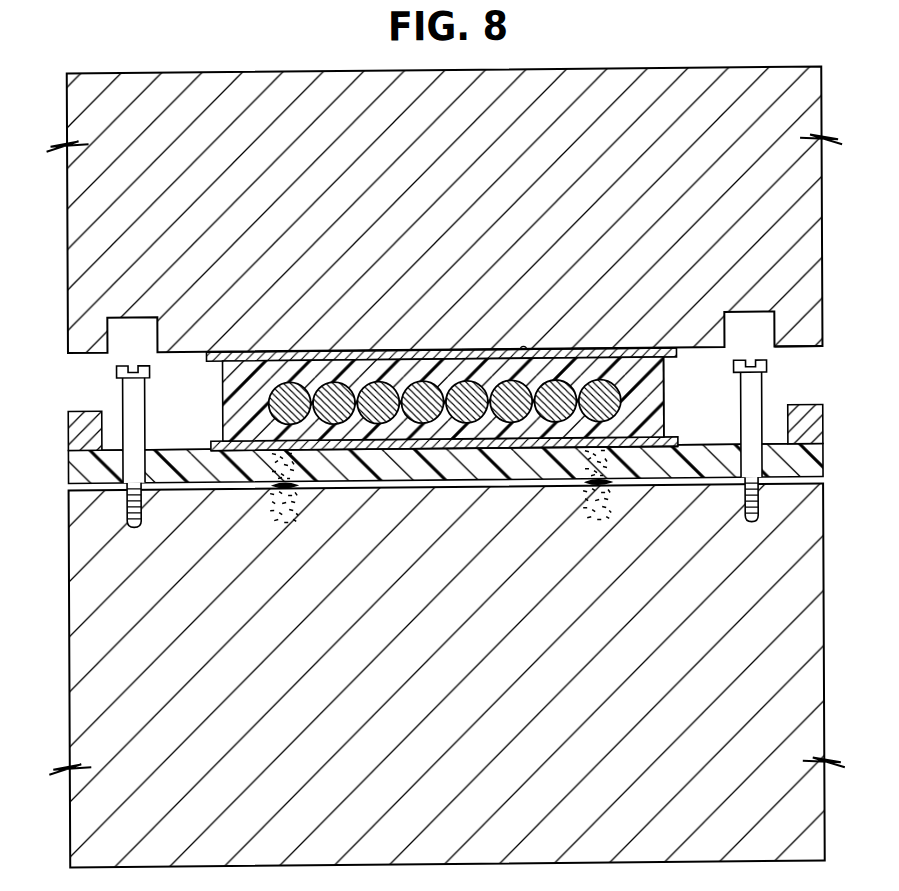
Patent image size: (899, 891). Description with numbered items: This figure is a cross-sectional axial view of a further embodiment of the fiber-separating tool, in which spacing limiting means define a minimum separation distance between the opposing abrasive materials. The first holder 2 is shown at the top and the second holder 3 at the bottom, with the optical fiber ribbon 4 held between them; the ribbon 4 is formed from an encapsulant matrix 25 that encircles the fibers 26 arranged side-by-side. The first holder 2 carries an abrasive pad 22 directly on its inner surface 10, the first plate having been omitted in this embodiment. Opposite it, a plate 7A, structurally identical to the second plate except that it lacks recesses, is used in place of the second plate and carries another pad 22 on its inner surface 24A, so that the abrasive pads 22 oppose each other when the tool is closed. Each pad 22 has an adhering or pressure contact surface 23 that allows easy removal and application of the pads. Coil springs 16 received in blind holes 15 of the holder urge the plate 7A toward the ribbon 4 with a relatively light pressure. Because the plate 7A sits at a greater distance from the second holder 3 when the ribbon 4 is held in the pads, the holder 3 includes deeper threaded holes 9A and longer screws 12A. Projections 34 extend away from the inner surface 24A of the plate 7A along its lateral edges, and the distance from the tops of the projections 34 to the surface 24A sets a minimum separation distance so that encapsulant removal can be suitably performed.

The first holder 2 is at (823, 108).
The second holder 3 is at (823, 634).
The optical fiber ribbon 4 is at (664, 428).
The plate 7A is at (823, 466).
The threaded holes 9A is at (128, 505).
The inner surface 10 is at (793, 350).
The screws 12A is at (758, 395).
The blind holes 15 is at (295, 512).
The coil springs 16 is at (276, 484).
The abrasive pads 22 is at (372, 350).
The adhering or pressure contact surface 23 is at (520, 350).
The inner surface of the plate 24A is at (178, 447).
The encapsulant matrix 25 is at (447, 366).
The fibers 26 is at (603, 388).
The projections 34 is at (85, 408).